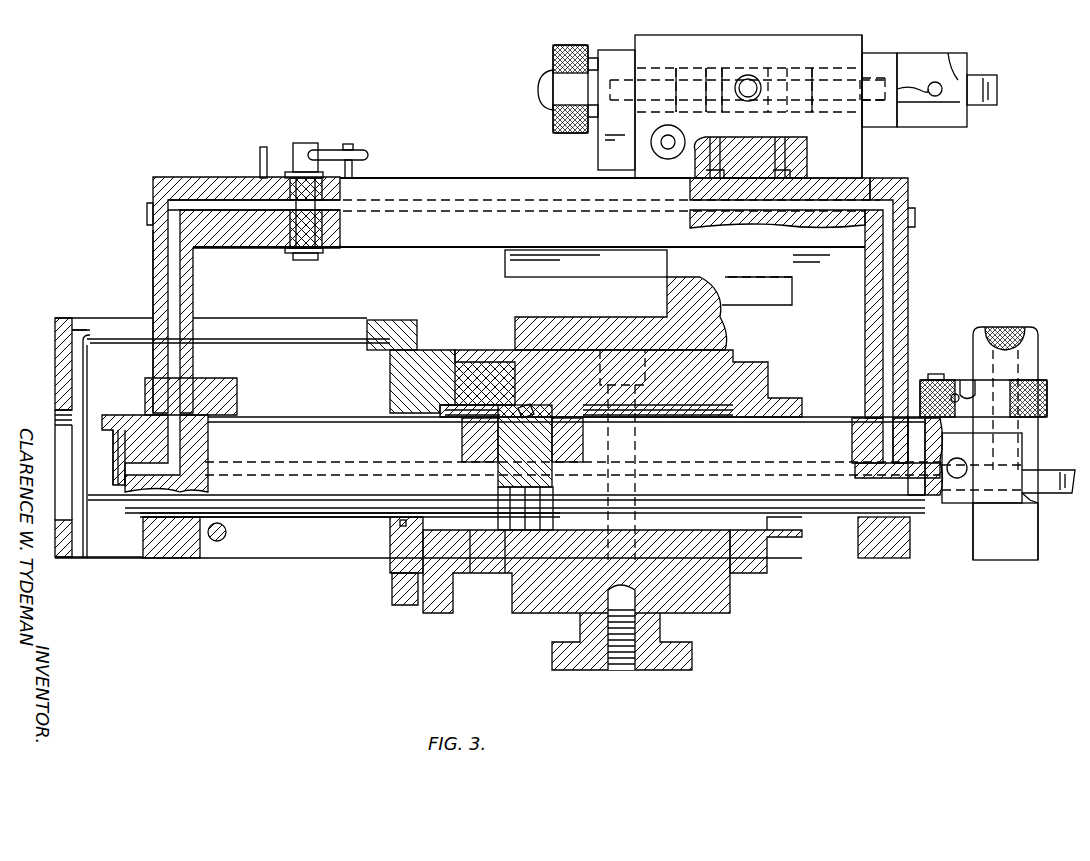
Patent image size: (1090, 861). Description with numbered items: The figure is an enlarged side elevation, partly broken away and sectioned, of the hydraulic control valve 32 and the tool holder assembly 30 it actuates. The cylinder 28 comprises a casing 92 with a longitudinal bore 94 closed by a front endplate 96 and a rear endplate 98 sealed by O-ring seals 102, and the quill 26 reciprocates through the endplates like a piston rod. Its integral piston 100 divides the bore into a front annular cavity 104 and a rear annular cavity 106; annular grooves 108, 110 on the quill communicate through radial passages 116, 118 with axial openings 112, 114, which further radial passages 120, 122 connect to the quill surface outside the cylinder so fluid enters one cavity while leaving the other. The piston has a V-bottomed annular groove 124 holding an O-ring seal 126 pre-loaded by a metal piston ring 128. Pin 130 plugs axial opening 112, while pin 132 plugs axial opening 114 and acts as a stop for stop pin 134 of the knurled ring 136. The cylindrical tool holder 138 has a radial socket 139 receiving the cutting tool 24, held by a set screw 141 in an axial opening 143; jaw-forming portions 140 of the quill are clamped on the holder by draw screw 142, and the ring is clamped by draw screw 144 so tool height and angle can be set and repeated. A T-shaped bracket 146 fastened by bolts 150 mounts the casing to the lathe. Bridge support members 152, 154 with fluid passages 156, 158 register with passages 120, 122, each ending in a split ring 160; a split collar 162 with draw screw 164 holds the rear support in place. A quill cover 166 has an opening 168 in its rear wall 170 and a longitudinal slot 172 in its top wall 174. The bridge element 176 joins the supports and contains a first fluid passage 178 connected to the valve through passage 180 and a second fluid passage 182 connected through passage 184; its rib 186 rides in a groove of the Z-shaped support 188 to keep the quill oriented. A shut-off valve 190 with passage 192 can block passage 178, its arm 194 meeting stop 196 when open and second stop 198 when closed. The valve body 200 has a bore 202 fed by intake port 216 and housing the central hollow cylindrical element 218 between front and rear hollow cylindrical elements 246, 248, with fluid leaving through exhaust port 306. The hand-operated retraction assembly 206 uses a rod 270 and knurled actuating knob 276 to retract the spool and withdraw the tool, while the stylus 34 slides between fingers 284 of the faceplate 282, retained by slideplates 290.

The cutting tool 24 is at (1058, 478).
The quill 26 is at (840, 515).
The cylinder 28 is at (540, 605).
The tool holder assembly 30 is at (148, 268).
The hydraulic control valve 32 is at (678, 36).
The stylus 34 is at (985, 108).
The casing 92 is at (735, 352).
The longitudinal bore 94 is at (487, 530).
The front endplate 96 is at (770, 567).
The rear endplate 98 is at (395, 560).
The double-acting hydraulic piston 100 is at (520, 405).
The O-ring seals 102 is at (400, 532).
The front annular cavity 104 is at (690, 418).
The rear annular cavity 106 is at (465, 405).
The annular groove 108 is at (498, 490).
The annular groove 110 is at (560, 492).
The axial opening 112 is at (208, 472).
The axial opening 114 is at (860, 480).
The radial passage 116 is at (465, 440).
The radial passage 118 is at (590, 440).
The radial passage 120 is at (172, 418).
The radial passage 122 is at (868, 440).
The annular groove 124 is at (510, 535).
The O-ring seal 126 is at (525, 405).
The metal piston ring 128 is at (538, 340).
The pin 130 is at (118, 487).
The pin 132 is at (933, 495).
The stop pin 134 is at (935, 380).
The knurled ring 136 is at (1040, 382).
The tool holder 138 is at (1000, 560).
The radial socket 139 is at (1030, 495).
The jaw-forming portions 140 is at (1010, 445).
The set screw 141 is at (1002, 330).
The draw screw 142 is at (956, 480).
The axial opening 143 is at (978, 340).
The draw screw 144 is at (956, 394).
The T-shaped bracket 146 is at (668, 665).
The bolts 150 is at (618, 655).
The rear bridge support member 152 is at (160, 293).
The front bridge support member 154 is at (908, 270).
The fluid passage 156 is at (182, 237).
The fluid passage 158 is at (884, 290).
The split ring 160 is at (160, 560).
The split collar 162 is at (232, 560).
The draw screw 164 is at (215, 542).
The quill cover 166 is at (58, 338).
The opening 168 is at (62, 412).
The rear wall 170 is at (60, 372).
The longitudinal slot 172 is at (330, 318).
The top wall 174 is at (372, 320).
The bridge element 176 is at (466, 190).
The first fluid passage 178 is at (233, 205).
The passage 180 is at (778, 155).
The second fluid passage 182 is at (835, 200).
The passage 184 is at (712, 148).
The longitudinal rib 186 is at (635, 262).
The Z-shaped support 188 is at (740, 308).
The shut-off valve 190 is at (300, 143).
The passage 192 is at (322, 205).
The arm 194 is at (330, 150).
The stop 196 is at (352, 163).
The second stop 198 is at (262, 147).
The valve body 200 is at (862, 40).
The bore 202 is at (696, 68).
The hand-operated retraction assembly 206 is at (600, 52).
The intake port 216 is at (748, 75).
The central hollow cylindrical element 218 is at (735, 68).
The front hollow cylindrical element 246 is at (812, 68).
The rear hollow cylindrical element 248 is at (682, 55).
The rod 270 is at (540, 88).
The knurled actuating knob 276 is at (572, 45).
The faceplate 282 is at (880, 62).
The fingers 284 is at (952, 108).
The slideplates 290 is at (932, 62).
The exhaust port 306 is at (652, 142).